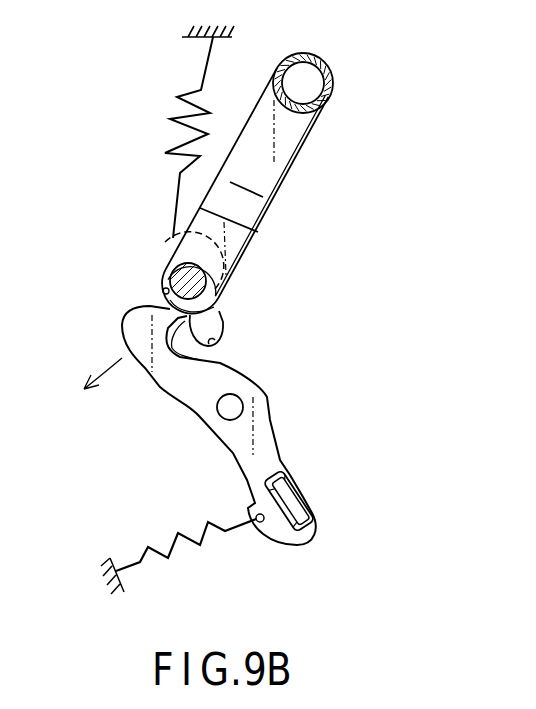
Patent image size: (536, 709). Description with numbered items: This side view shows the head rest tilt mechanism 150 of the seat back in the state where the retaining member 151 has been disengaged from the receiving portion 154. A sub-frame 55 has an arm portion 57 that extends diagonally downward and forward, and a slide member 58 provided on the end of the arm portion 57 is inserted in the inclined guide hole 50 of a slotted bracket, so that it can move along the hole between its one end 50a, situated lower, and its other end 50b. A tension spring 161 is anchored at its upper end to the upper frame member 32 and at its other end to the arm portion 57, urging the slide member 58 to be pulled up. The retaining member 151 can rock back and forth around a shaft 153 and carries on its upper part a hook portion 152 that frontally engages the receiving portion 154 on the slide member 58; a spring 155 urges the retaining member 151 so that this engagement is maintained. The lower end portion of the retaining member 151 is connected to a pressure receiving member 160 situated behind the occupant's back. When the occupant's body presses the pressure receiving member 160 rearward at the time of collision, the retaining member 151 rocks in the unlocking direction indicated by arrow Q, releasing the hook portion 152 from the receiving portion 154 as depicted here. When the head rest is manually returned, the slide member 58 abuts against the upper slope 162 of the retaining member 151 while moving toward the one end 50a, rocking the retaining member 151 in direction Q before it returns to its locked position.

The upper frame member 32 is at (238, 33).
The sub-frame 55 is at (327, 66).
The arm portion 57 is at (290, 182).
The tension spring 161 is at (176, 113).
The other end of guide hole 50b is at (163, 237).
The head rest tilt mechanism 150 is at (110, 216).
The hook portion 152 is at (168, 279).
The receiving portion 154 is at (197, 248).
The slide member 58 is at (208, 298).
The guide hole 50 is at (217, 320).
The one end of guide hole 50a is at (221, 342).
The upper slope 162 is at (162, 291).
The retaining member 151 is at (178, 377).
The shaft 153 is at (230, 407).
The spring 155 is at (170, 540).
The pressure receiving member 160 is at (271, 528).